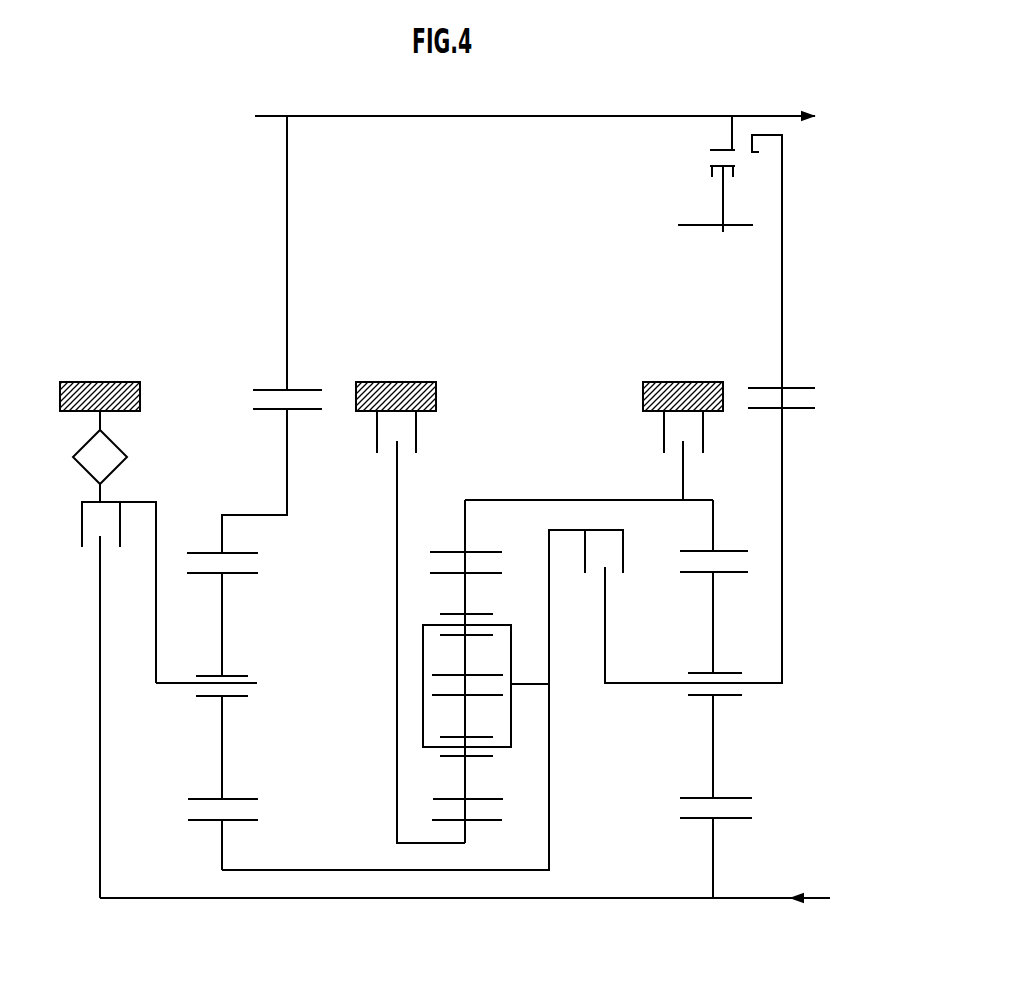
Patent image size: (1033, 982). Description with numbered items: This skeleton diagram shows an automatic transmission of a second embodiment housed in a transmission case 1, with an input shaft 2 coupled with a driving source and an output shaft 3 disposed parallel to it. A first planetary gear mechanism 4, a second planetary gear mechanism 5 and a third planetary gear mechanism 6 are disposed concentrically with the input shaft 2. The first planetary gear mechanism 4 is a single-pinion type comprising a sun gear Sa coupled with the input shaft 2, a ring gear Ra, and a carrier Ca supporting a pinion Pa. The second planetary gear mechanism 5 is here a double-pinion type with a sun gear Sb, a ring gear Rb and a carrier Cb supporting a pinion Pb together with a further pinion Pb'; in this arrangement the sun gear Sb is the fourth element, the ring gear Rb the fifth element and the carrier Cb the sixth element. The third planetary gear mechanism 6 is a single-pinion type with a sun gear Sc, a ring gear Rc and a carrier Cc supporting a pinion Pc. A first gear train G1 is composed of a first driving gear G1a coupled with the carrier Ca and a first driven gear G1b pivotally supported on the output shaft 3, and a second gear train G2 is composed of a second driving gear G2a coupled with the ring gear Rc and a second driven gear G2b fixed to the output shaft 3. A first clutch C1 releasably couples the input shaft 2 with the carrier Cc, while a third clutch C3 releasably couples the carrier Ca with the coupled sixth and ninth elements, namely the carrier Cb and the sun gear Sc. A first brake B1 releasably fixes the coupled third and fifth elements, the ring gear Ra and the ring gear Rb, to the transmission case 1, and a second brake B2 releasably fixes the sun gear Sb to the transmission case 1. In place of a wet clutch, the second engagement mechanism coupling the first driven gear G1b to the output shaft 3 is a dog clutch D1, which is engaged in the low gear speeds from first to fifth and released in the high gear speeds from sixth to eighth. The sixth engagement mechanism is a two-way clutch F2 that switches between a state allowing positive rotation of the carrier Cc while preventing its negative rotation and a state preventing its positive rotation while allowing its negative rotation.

The transmission case 1 is at (115, 382).
The input shaft 2 is at (733, 898).
The output shaft 3 is at (752, 116).
The first planetary gear mechanism 4 is at (727, 612).
The second planetary gear mechanism 5 is at (508, 610).
The third planetary gear mechanism 6 is at (258, 714).
The dog clutch D1 is at (696, 184).
The 2-way clutch F2 is at (75, 460).
The first gear train G1 is at (792, 223).
The first driving gear G1a is at (814, 408).
The first driven gear G1b is at (814, 388).
The second gear train G2 is at (280, 223).
The second driving gear G2a is at (320, 409).
The second driven gear G2b is at (255, 390).
The first brake B1 is at (683, 455).
The second brake B2 is at (421, 627).
The first clutch C1 is at (119, 700).
The third clutch C3 is at (666, 700).
The ring gear Ra is at (748, 552).
The ring gear Rb is at (431, 553).
The ring gear Rc is at (258, 553).
The pinion Pa is at (690, 798).
The pinion Pb is at (453, 777).
The second pinion of second planetary gear set Pb' is at (449, 600).
The pinion Pc is at (192, 799).
The sun gear Sa is at (745, 818).
The sun gear Sb is at (498, 820).
The sun gear Sc is at (250, 820).
The carrier Ca is at (648, 683).
The carrier Cb is at (511, 725).
The carrier Cc is at (177, 683).